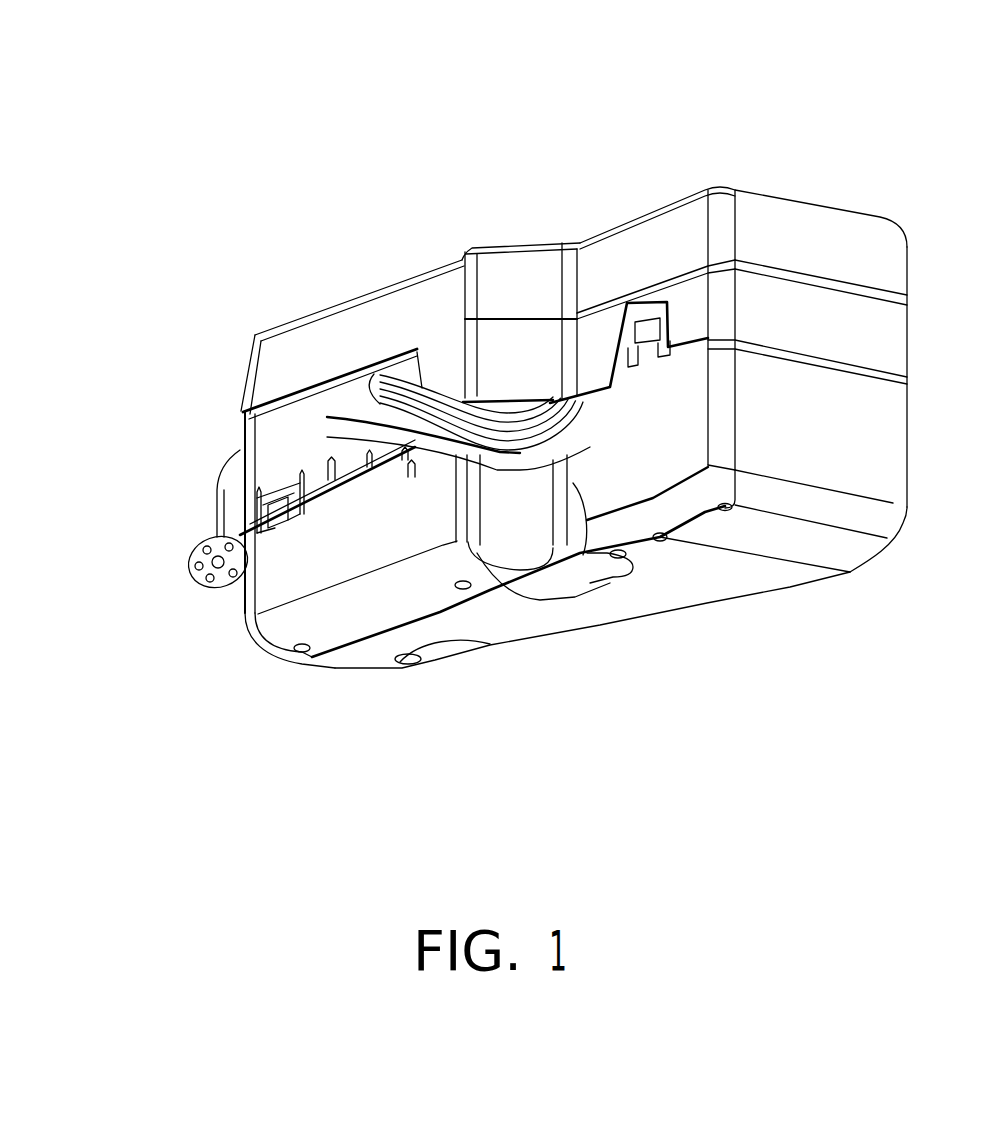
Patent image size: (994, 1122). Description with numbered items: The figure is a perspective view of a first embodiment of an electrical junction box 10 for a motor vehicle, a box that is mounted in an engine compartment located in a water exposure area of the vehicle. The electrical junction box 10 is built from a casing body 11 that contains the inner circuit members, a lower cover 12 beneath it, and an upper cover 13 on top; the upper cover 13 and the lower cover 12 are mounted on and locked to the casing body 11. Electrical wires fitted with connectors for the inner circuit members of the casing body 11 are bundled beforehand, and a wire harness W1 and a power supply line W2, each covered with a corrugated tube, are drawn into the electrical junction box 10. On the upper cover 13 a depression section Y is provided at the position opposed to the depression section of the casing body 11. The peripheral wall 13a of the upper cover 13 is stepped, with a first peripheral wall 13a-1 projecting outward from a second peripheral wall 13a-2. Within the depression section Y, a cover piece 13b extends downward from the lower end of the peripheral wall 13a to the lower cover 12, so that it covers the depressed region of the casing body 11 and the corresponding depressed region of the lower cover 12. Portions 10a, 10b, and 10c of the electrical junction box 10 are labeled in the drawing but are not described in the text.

The electrical junction box 10 is at (316, 301).
The central wire lead-out portion of junction box 10a is at (525, 542).
The left portion of junction box 10b is at (393, 547).
The right portion of junction box 10c is at (645, 467).
The casing body 11 is at (277, 450).
The lower cover 12 is at (260, 587).
The upper cover 13 is at (243, 378).
The peripheral wall 13a is at (717, 44).
The first peripheral wall 13a-1 is at (381, 303).
The second peripheral wall 13a-2 is at (643, 232).
The cover piece 13b is at (515, 333).
The wire harness W1 is at (527, 430).
The power supply line W2 is at (470, 545).
The depression section Y is at (570, 229).